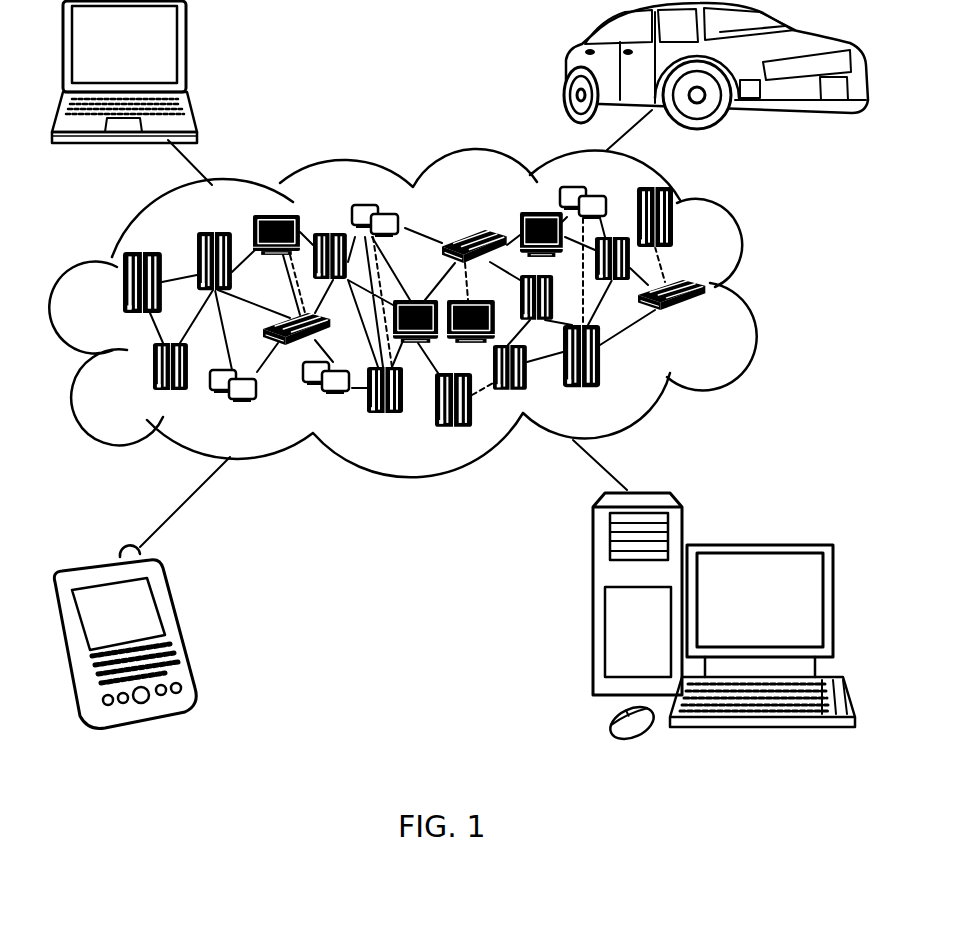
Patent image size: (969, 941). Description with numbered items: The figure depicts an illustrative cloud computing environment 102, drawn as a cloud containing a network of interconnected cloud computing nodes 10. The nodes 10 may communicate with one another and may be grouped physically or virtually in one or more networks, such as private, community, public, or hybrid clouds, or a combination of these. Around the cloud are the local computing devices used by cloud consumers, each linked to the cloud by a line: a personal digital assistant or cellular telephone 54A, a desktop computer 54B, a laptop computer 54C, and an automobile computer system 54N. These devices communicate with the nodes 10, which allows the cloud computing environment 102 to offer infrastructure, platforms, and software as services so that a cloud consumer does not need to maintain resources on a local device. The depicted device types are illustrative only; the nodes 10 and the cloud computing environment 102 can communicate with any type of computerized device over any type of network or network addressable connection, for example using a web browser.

The cloud computing nodes 10 is at (708, 318).
The cloud computing environment 102 is at (757, 291).
The personal digital assistant (PDA) or cellular telephone 54A is at (182, 628).
The desktop computer 54B is at (758, 545).
The laptop computer 54C is at (187, 52).
The automobile computer system 54N is at (568, 65).